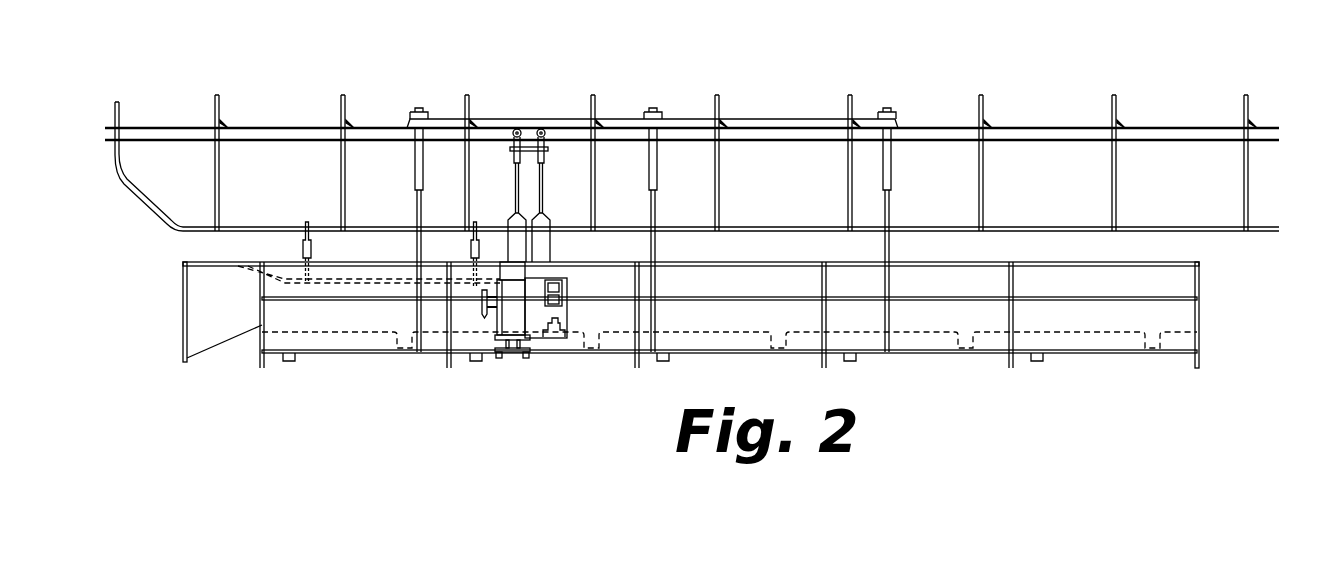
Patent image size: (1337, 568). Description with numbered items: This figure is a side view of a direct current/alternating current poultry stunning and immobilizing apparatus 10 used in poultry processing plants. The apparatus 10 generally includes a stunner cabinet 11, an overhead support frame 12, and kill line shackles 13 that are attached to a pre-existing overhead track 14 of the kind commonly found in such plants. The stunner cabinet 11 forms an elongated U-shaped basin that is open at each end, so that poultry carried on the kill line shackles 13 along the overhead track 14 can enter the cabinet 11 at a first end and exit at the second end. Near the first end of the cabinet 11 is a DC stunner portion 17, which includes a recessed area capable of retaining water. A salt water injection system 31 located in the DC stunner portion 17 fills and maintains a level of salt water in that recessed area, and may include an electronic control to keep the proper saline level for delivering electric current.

The poultry stunning and immobilizing apparatus 10 is at (692, 182).
The stunner cabinet 11 is at (1216, 300).
The overhead support frame 12 is at (782, 100).
The kill line shackles 13 is at (560, 186).
The overhead track 14 is at (1183, 137).
The DC stunner portion 17 is at (522, 361).
The salt water injection system 31 is at (485, 343).